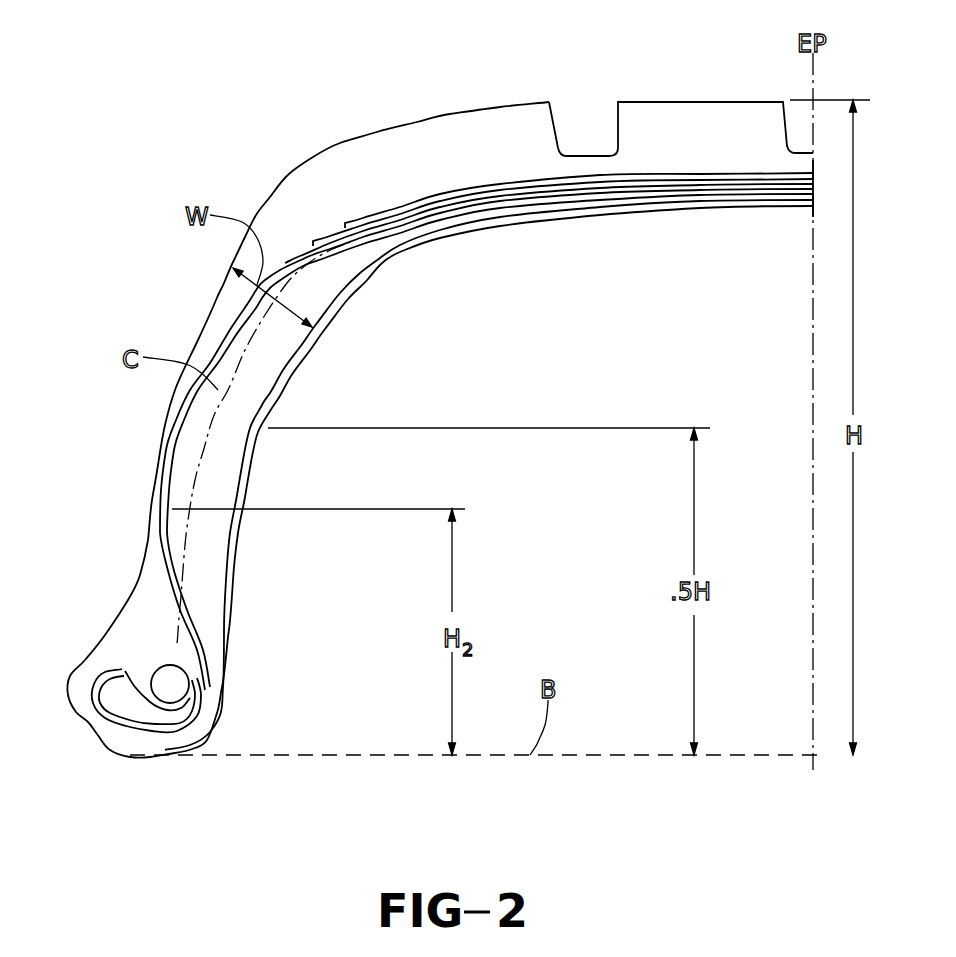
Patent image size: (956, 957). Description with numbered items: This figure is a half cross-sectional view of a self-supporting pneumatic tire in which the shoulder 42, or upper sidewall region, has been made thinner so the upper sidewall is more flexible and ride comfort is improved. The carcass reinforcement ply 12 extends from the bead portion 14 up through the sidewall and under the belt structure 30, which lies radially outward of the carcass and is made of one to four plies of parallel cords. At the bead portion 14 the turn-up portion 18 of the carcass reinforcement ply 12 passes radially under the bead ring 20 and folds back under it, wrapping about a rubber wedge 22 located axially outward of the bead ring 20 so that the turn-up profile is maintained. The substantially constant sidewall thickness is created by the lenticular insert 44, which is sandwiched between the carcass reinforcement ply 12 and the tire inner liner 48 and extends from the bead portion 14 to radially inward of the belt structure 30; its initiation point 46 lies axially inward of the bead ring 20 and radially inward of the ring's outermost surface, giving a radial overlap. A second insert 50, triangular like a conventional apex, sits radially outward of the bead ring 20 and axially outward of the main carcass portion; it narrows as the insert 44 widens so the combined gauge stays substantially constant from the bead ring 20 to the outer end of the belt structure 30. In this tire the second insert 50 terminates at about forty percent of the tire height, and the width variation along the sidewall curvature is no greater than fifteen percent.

The carcass reinforcement ply 12 is at (222, 342).
The bead portion 14 is at (66, 648).
The turn-up portion 18 is at (95, 690).
The bead ring 20 is at (178, 695).
The rubber wedge 22 is at (130, 715).
The belt structure 30 is at (436, 190).
The tire shoulder 42 is at (251, 226).
The insert 44 is at (272, 358).
The initiation point 46 is at (208, 695).
The tire inner liner 48 is at (373, 270).
The second insert 50 is at (155, 602).